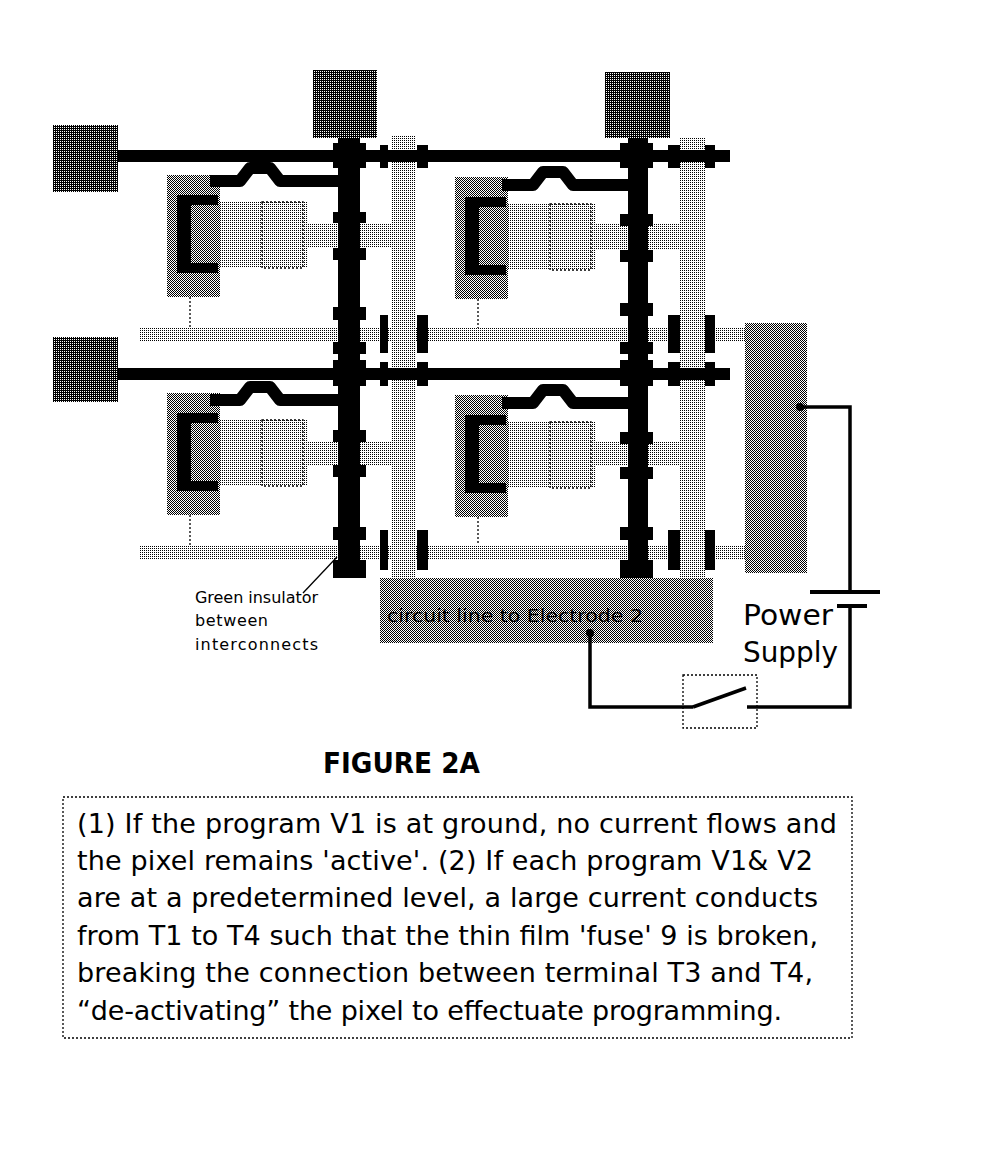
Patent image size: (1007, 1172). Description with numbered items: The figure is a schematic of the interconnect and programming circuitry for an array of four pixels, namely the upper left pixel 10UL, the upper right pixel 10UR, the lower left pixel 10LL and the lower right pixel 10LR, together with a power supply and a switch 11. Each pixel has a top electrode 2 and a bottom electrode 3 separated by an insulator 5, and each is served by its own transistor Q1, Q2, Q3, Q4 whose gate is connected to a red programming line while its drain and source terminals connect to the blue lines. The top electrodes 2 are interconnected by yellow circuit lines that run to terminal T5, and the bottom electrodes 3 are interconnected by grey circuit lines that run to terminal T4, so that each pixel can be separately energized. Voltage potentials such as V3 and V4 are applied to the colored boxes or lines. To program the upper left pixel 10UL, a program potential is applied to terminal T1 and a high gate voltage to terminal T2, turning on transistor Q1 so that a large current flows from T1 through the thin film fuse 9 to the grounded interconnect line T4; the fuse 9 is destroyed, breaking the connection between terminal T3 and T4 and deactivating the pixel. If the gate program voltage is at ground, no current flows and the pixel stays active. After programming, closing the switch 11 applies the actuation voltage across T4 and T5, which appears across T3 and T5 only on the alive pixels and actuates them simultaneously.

The top electrode 2 is at (393, 345).
The bottom electrode 3 is at (200, 287).
The insulator 5 is at (176, 250).
The thin film fuse 9 is at (186, 312).
The upper left pixel 10UL is at (226, 186).
The upper right pixel 10UR is at (520, 191).
The lower left pixel 10LL is at (233, 497).
The lower right pixel 10LR is at (536, 573).
The switch 11 is at (723, 735).
The terminal T1 is at (380, 74).
The terminal T2 is at (90, 124).
The terminal T3 is at (156, 216).
The terminal T4 is at (798, 325).
The terminal T5 is at (718, 686).
The transistor Q1 is at (260, 172).
The transistor Q2 is at (550, 175).
The transistor Q3 is at (260, 392).
The transistor Q4 is at (548, 392).
The voltage potential V3 is at (634, 88).
The voltage potential V4 is at (92, 390).